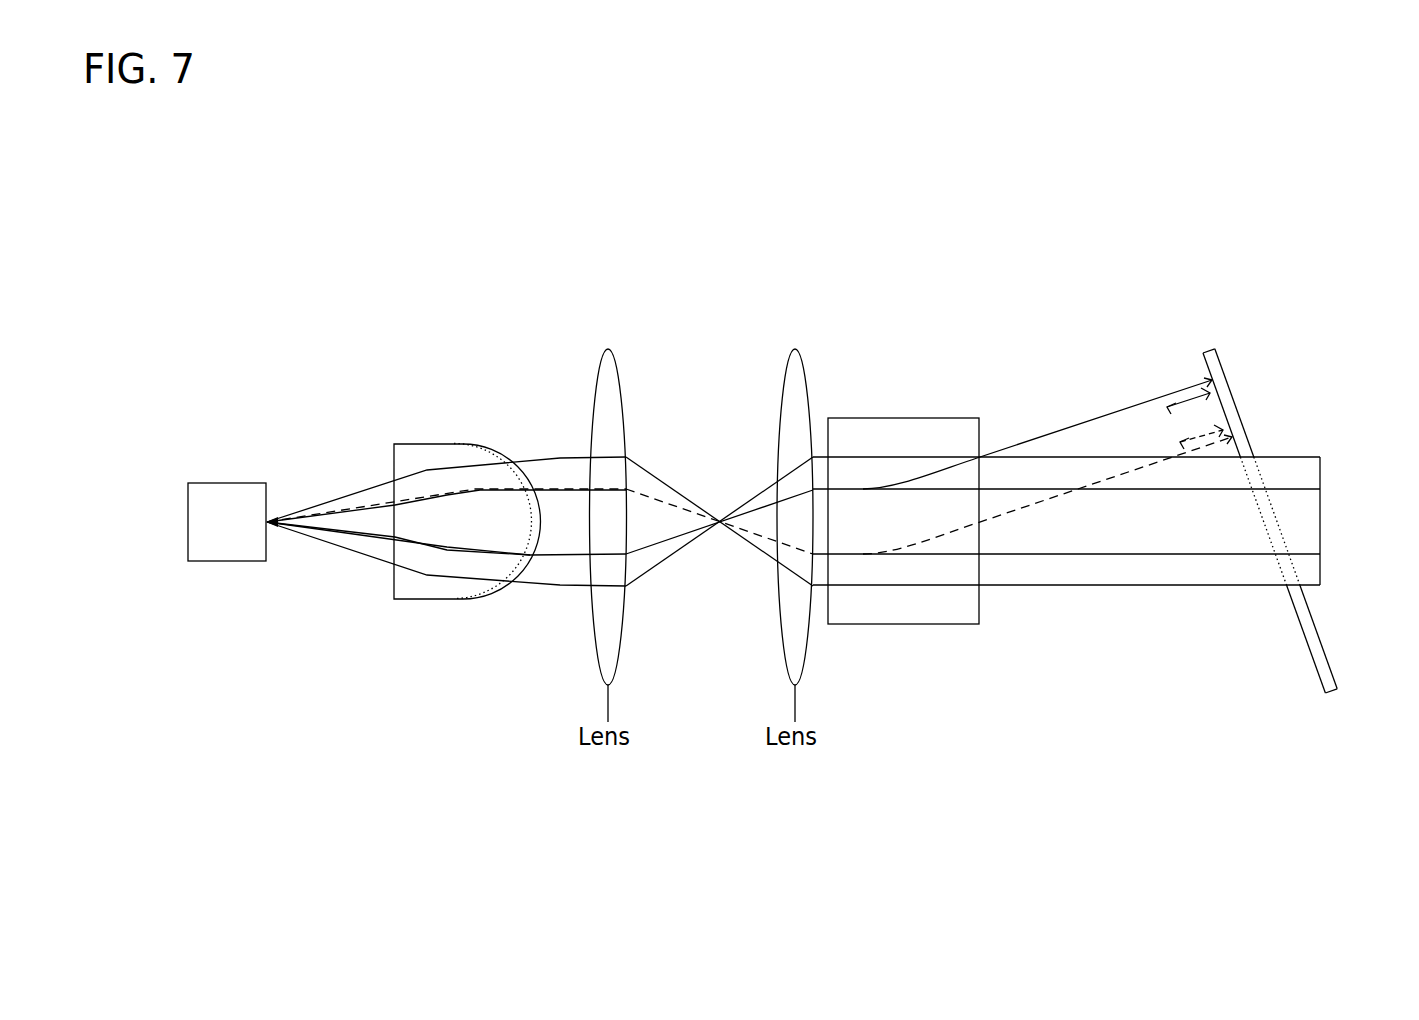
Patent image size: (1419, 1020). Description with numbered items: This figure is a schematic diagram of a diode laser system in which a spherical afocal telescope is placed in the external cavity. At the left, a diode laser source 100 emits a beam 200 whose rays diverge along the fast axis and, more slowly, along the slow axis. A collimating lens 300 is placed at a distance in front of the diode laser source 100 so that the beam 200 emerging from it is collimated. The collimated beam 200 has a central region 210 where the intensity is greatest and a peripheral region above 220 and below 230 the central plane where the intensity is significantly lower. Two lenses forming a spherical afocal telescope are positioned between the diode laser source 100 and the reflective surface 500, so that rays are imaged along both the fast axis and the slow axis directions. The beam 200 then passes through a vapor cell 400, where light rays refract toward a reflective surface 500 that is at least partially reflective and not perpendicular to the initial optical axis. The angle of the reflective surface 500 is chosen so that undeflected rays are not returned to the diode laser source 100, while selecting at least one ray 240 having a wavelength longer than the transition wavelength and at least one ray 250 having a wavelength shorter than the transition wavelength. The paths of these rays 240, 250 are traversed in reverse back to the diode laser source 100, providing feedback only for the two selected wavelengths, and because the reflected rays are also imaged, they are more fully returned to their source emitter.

The diode laser source 100 is at (205, 535).
The beam 200 is at (316, 460).
The collimating lens 300 is at (442, 444).
The vapor cell 400 is at (903, 418).
The reflective surface 500 is at (1208, 350).
The central region 210 is at (1302, 502).
The peripheral region above 220 is at (1289, 465).
The peripheral region below 230 is at (1312, 568).
The ray 240 is at (1153, 399).
The ray 250 is at (1160, 461).